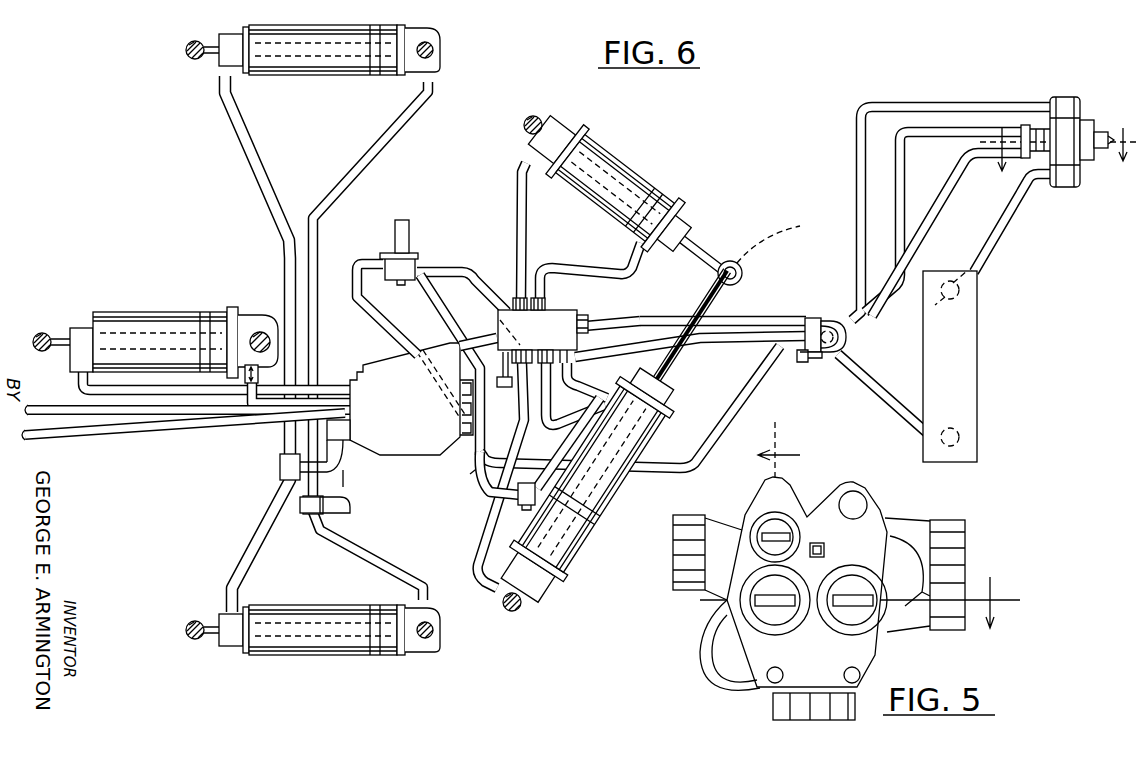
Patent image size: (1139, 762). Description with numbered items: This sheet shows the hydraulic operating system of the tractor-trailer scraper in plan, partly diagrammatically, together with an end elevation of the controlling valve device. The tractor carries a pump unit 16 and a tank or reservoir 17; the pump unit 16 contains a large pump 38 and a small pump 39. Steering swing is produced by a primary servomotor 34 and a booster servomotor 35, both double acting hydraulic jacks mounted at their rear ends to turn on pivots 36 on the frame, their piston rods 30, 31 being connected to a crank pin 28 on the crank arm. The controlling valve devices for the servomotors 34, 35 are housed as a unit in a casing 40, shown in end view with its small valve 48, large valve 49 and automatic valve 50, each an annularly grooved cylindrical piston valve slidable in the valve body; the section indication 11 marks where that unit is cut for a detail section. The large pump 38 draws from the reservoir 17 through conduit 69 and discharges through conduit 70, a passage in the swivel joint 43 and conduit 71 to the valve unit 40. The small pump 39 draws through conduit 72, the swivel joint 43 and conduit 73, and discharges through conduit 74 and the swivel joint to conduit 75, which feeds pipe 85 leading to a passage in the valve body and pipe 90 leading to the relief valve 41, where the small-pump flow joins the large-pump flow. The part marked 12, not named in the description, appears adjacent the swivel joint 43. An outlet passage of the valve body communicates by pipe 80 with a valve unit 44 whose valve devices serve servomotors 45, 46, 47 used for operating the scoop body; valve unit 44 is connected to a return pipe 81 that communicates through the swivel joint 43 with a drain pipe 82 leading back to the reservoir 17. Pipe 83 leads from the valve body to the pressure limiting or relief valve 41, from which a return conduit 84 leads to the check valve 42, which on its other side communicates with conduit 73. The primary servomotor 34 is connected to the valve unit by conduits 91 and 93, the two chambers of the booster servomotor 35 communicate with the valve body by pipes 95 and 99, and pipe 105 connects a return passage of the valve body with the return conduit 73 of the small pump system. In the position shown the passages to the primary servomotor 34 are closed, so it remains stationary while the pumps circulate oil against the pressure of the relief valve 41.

In FIG. 6, the section line 11 is at (766, 456).
In FIG. 5, the section line 11 is at (860, 542).
In FIG. 6, the pivot clevis 12 is at (830, 325).
In FIG. 6, the pump unit 16 is at (1098, 112).
In FIG. 6, the tank or reservoir 17 is at (985, 365).
In FIG. 6, the crank pin 28 is at (740, 262).
In FIG. 6, the piston rod 30 is at (680, 373).
In FIG. 6, the piston rod 31 is at (708, 250).
In FIG. 6, the primary servomotor 34 is at (598, 531).
In FIG. 6, the booster servomotor 35 is at (640, 175).
In FIG. 6, the pivots 36 is at (540, 120).
In FIG. 6, the large pump 38 is at (1075, 175).
In FIG. 6, the small pump 39 is at (1028, 160).
In FIG. 6, the controlling valve unit casing 40 is at (552, 312).
In FIG. 5, the controlling valve unit casing 40 is at (890, 518).
In FIG. 6, the pressure limit or relief valve 41 is at (412, 262).
In FIG. 6, the check valve 42 is at (523, 508).
In FIG. 6, the swivel joint 43 is at (816, 362).
In FIG. 6, the valve unit 44 is at (408, 440).
In FIG. 6, the servomotor 45 is at (328, 70).
In FIG. 6, the servomotor 46 is at (162, 320).
In FIG. 6, the servomotor 47 is at (297, 615).
In FIG. 5, the small valve 48 is at (790, 533).
In FIG. 5, the large valve 49 is at (775, 606).
In FIG. 5, the automatic valve 50 is at (852, 606).
In FIG. 6, the conduit 69 is at (998, 235).
In FIG. 6, the conduit 70 is at (908, 106).
In FIG. 6, the conduit 71 is at (606, 320).
In FIG. 6, the conduit 72 is at (938, 225).
In FIG. 6, the conduit 73 is at (632, 375).
In FIG. 6, the conduit 74 is at (946, 133).
In FIG. 6, the conduit 75 is at (645, 320).
In FIG. 6, the pipe 80 is at (486, 342).
In FIG. 6, the return pipe 81 is at (485, 462).
In FIG. 6, the drain pipe 82 is at (880, 408).
In FIG. 6, the pipe 83 is at (472, 282).
In FIG. 6, the return conduit 84 is at (380, 312).
In FIG. 6, the pipe 85 is at (497, 368).
In FIG. 6, the pipe 90 is at (440, 298).
In FIG. 6, the conduit 91 is at (478, 554).
In FIG. 6, the conduit 93 is at (574, 412).
In FIG. 6, the pipe 95 is at (526, 197).
In FIG. 6, the pipe 99 is at (600, 270).
In FIG. 6, the pipe 105 is at (582, 382).